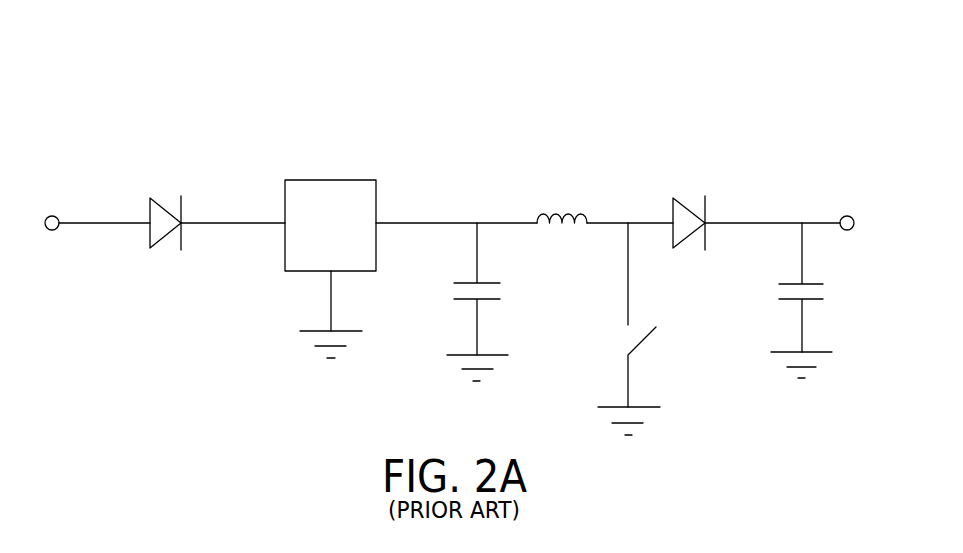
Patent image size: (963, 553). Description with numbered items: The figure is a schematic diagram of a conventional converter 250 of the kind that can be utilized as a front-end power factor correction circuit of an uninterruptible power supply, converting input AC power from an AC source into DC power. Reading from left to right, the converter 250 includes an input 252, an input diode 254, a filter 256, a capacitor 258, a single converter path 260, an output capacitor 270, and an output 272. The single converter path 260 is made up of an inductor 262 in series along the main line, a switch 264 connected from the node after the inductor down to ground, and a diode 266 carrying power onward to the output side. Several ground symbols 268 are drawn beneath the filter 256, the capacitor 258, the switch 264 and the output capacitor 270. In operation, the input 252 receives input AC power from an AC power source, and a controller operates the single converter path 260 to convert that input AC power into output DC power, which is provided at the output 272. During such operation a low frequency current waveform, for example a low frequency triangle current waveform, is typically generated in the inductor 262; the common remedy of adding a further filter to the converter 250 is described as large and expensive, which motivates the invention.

The conventional converter 250 is at (104, 112).
The input (Vi) 252 is at (45, 228).
The input diode 254 is at (160, 240).
The filter 256 is at (313, 180).
The capacitor (Ci) 258 is at (487, 283).
The single converter path 260 is at (843, 163).
The inductor (L1) 262 is at (540, 220).
The switch (S1) 264 is at (622, 343).
The diode (D1) 266 is at (684, 240).
The ground 268 is at (350, 330).
The output capacitor 270 is at (812, 284).
The output 272 is at (855, 226).